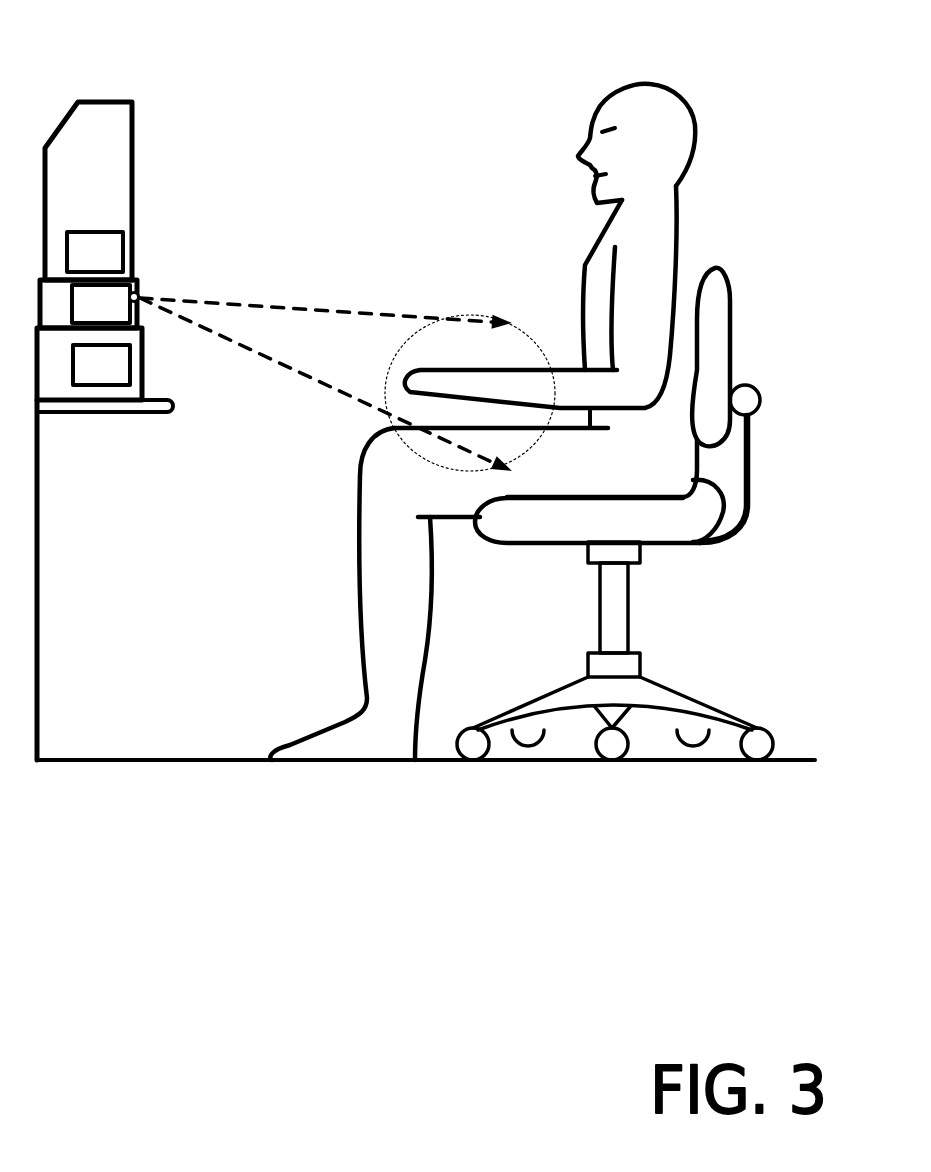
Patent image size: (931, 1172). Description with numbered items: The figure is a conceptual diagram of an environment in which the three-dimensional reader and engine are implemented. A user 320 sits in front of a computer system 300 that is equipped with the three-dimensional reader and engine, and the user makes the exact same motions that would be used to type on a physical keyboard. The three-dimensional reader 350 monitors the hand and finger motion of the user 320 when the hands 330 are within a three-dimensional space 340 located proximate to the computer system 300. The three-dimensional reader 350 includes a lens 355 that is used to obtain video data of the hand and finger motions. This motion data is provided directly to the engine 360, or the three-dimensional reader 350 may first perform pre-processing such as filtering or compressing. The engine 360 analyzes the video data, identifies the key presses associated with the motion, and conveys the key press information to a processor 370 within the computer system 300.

The computer system 300 is at (138, 113).
The user 320 is at (693, 115).
The hands 330 is at (422, 367).
The 3D space 340 is at (451, 361).
The 3D reader 350 is at (105, 304).
The lens 355 is at (141, 295).
The engine 360 is at (101, 365).
The processor 370 is at (95, 252).